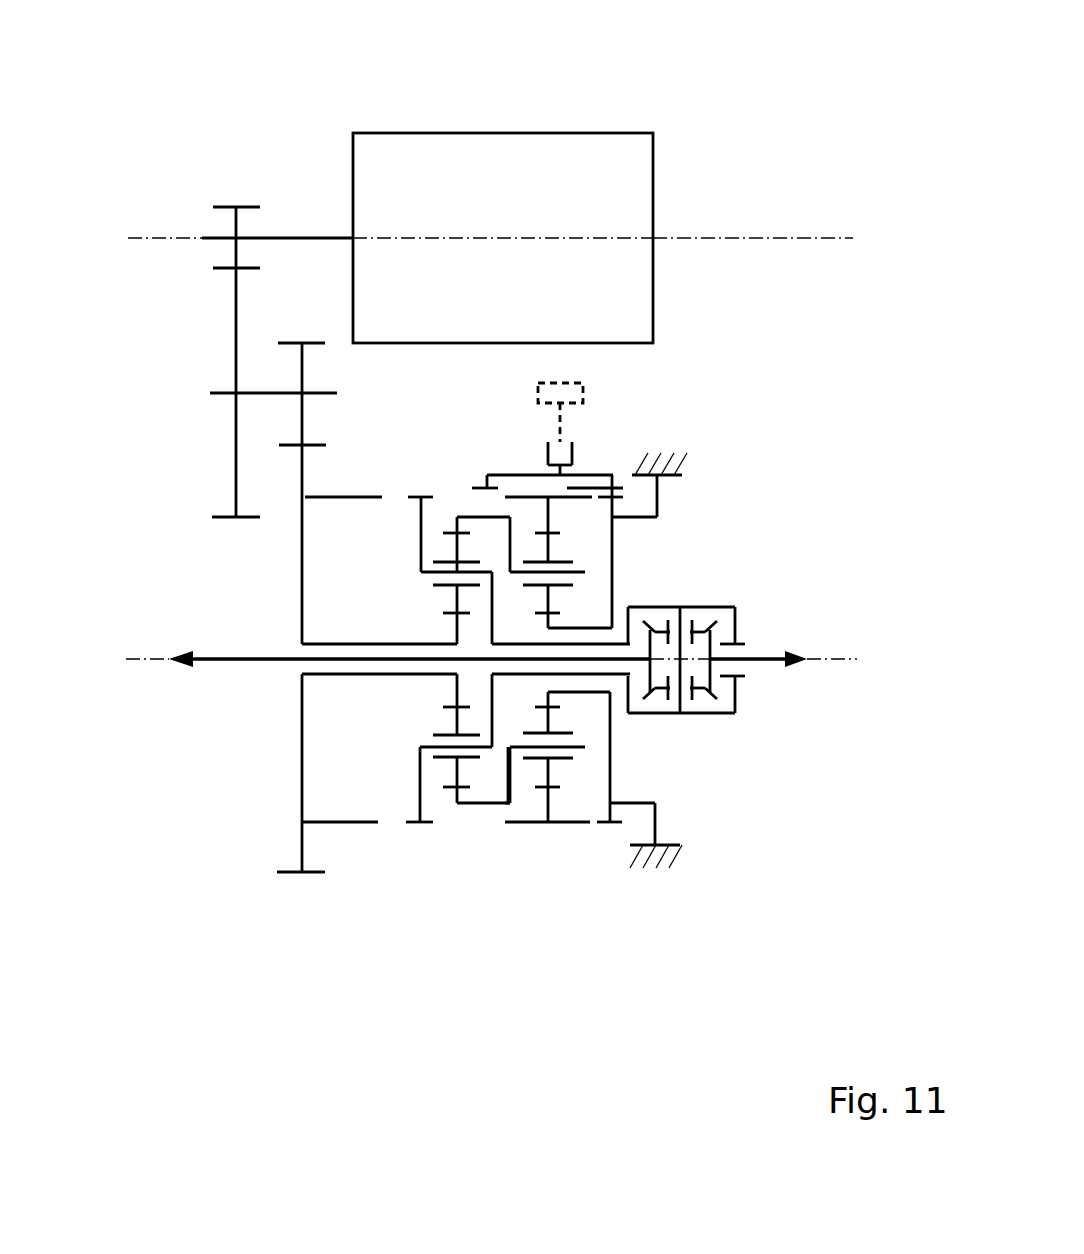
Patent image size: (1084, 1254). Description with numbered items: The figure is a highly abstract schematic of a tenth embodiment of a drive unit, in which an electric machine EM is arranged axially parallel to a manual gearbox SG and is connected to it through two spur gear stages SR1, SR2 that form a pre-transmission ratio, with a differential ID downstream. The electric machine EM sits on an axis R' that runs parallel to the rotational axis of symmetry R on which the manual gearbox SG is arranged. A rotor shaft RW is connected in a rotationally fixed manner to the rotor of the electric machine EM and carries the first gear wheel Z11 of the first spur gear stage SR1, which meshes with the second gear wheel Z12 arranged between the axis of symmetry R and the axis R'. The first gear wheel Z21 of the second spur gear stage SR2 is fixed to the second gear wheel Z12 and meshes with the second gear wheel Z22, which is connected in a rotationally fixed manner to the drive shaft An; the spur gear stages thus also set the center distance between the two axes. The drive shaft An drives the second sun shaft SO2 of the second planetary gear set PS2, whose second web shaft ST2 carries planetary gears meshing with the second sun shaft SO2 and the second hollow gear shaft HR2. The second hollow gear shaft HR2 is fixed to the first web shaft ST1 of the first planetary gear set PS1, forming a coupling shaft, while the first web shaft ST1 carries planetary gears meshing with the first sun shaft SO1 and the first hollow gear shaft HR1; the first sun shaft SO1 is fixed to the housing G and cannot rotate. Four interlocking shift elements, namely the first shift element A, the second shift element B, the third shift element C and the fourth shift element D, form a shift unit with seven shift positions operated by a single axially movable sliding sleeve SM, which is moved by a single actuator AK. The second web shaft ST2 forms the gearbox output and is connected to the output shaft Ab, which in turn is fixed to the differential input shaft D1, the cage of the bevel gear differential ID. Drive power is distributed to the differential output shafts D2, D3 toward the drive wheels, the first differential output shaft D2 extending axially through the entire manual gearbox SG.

The first gear wheel of the first spur gear stage Z11 is at (233, 227).
The first spur gear stage SR1 is at (236, 197).
The rotor shaft RW is at (305, 236).
The third shift element C is at (366, 476).
The second shift element B is at (424, 479).
The first shift element A is at (491, 453).
The actuator AK is at (567, 361).
The electric machine EM is at (654, 115).
The sliding sleeve SM is at (658, 243).
The axis R' is at (753, 125).
The manual gearbox SG is at (788, 408).
The first hollow gear shaft HR1 is at (550, 520).
The first web shaft ST1 is at (577, 575).
The first sun shaft SO1 is at (560, 620).
The differential ID is at (757, 621).
The rotational axis of symmetry R is at (824, 682).
The second differential output shaft D3 is at (757, 663).
The differential input shaft D1 is at (703, 715).
The output shaft Ab is at (612, 683).
The first gear wheel of the second spur gear stage Z21 is at (300, 419).
The second gear wheel of the first spur gear stage Z12 is at (236, 469).
The fourth shift element D is at (329, 511).
The second web shaft ST2 is at (433, 574).
The second sun shaft SO2 is at (455, 633).
The first differential output shaft D2 is at (224, 662).
The second gear wheel of the second spur gear stage Z22 is at (302, 706).
The drive shaft An is at (357, 675).
The second hollow gear shaft HR2 is at (453, 792).
The second spur gear stage SR2 is at (304, 888).
The second planetary gear set PS2 is at (457, 842).
The first planetary gear set PS1 is at (548, 845).
The housing G is at (667, 916).